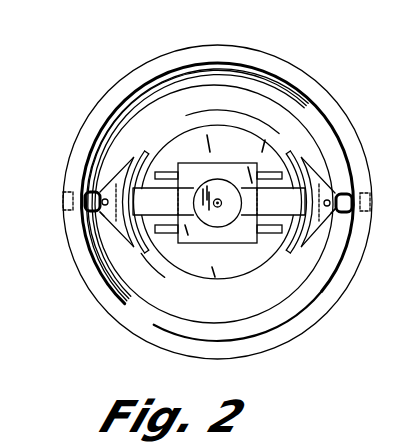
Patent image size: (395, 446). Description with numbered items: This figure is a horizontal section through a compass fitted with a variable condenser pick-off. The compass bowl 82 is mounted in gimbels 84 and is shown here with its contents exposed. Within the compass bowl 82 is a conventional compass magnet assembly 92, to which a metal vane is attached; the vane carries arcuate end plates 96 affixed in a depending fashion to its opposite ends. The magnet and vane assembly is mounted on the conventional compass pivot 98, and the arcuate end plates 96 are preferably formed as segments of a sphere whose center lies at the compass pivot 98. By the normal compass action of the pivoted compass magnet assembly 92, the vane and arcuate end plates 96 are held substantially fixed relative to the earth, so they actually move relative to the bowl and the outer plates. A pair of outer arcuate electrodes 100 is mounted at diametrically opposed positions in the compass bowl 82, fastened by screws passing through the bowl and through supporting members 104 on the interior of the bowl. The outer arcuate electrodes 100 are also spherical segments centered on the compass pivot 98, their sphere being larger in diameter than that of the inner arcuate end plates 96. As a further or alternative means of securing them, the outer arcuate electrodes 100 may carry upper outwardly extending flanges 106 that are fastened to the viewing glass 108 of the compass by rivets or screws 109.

The compass bowl 82 is at (137, 69).
The gimbel 84 is at (160, 188).
The compass magnet assembly 92 is at (258, 243).
The arcuate end plates 96 is at (133, 160).
The compass pivot 98 is at (218, 207).
The outer arcuate electrodes 100 is at (110, 181).
The supporting members 104 is at (85, 200).
The upper outwardly extending flanges 106 is at (104, 216).
The viewing glass 108 is at (312, 220).
The rivets or screws 109 is at (108, 202).